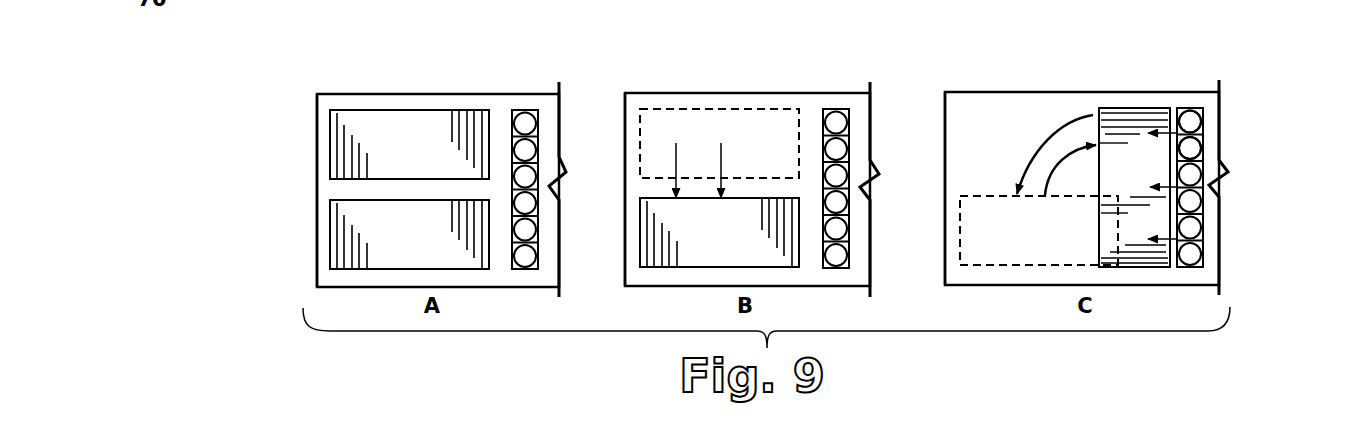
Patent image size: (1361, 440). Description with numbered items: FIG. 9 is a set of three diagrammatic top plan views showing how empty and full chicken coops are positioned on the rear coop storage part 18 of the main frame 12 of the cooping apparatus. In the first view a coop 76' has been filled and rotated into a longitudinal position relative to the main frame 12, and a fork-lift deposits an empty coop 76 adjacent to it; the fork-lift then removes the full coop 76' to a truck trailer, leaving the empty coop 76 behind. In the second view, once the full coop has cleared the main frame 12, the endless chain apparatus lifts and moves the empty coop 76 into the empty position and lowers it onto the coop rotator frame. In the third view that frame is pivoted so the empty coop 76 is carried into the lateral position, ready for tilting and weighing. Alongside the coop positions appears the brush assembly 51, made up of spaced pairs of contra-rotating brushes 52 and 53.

The main frame 12 is at (437, 94).
The rear coop storage part 18 is at (317, 177).
The brush assembly 51 is at (899, 149).
The contra-rotating brush 52 is at (1204, 122).
The contra-rotating brush 53 is at (1205, 147).
The chicken receiving coop 76 is at (697, 142).
The filled coop 76' is at (356, 234).